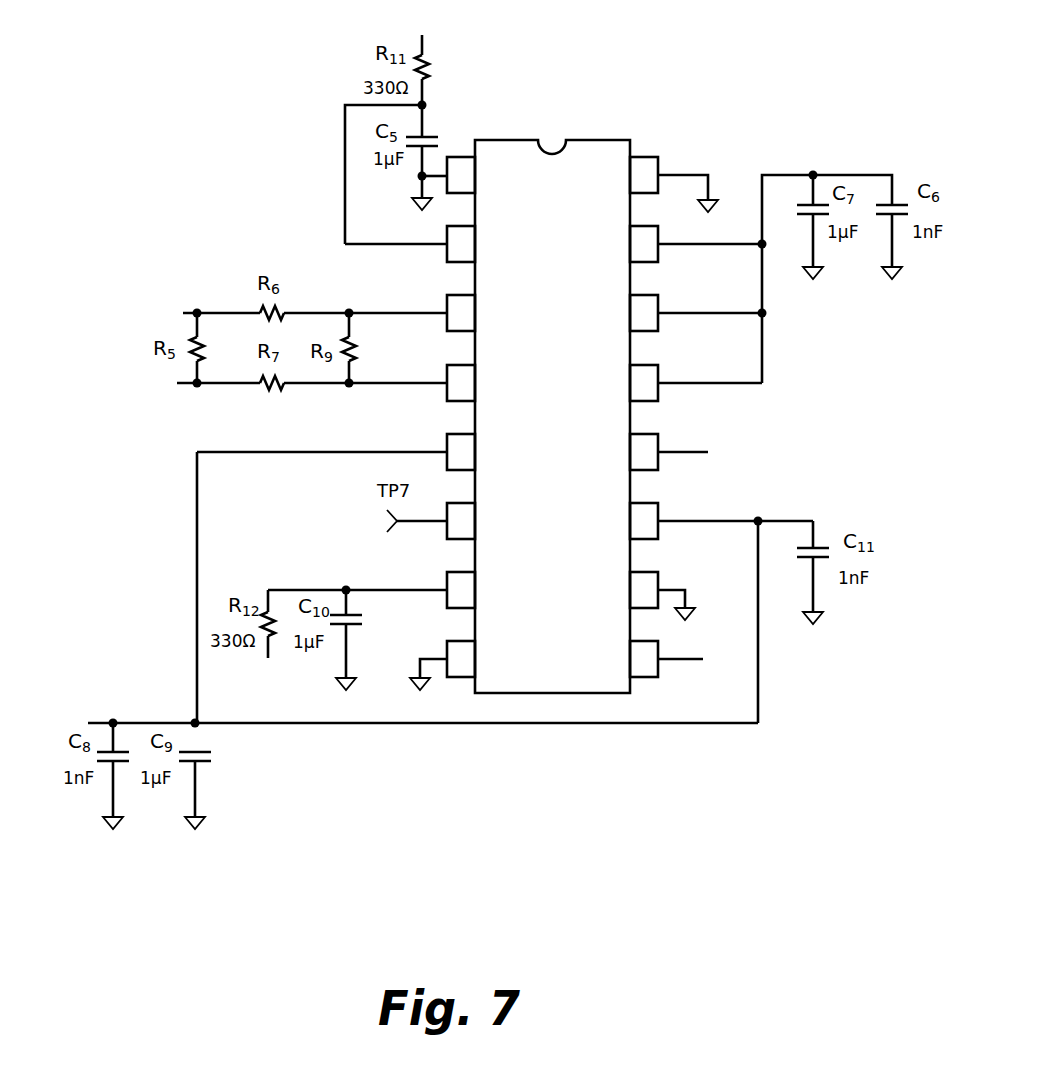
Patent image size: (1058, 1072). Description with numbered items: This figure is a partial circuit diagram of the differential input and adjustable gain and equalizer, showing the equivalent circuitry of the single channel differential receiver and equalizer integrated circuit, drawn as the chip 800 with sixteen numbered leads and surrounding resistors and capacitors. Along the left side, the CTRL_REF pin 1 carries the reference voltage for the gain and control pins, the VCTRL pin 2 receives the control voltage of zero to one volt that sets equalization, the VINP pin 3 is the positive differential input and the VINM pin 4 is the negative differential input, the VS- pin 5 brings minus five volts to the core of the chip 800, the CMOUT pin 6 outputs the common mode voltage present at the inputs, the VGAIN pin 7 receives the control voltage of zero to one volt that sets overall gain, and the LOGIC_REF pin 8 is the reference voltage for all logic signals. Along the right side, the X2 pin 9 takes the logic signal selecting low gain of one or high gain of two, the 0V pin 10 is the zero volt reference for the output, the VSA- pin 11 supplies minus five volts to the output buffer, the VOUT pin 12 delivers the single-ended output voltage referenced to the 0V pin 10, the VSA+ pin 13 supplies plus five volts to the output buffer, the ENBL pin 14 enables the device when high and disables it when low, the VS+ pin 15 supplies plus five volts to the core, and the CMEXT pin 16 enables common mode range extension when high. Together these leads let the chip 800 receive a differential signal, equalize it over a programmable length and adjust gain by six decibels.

The chip 800 is at (600, 140).
The CTRL_REF pin 1 is at (448, 175).
The VCTRL pin 2 is at (410, 244).
The VINP pin 3 is at (379, 313).
The VINM pin 4 is at (379, 383).
The VS- pin 5 is at (336, 452).
The CMOUT pin 6 is at (436, 521).
The VGAIN pin 7 is at (371, 590).
The LOGIC_REF pin 8 is at (442, 665).
The X2 pin 9 is at (666, 659).
The 0V pin 10 is at (662, 596).
The VSA- pin 11 is at (721, 521).
The VOUT pin 12 is at (669, 452).
The VSA+ pin 13 is at (696, 383).
The ENBL pin 14 is at (696, 313).
The VS+ pin 15 is at (696, 244).
The CMEXT pin 16 is at (674, 184).